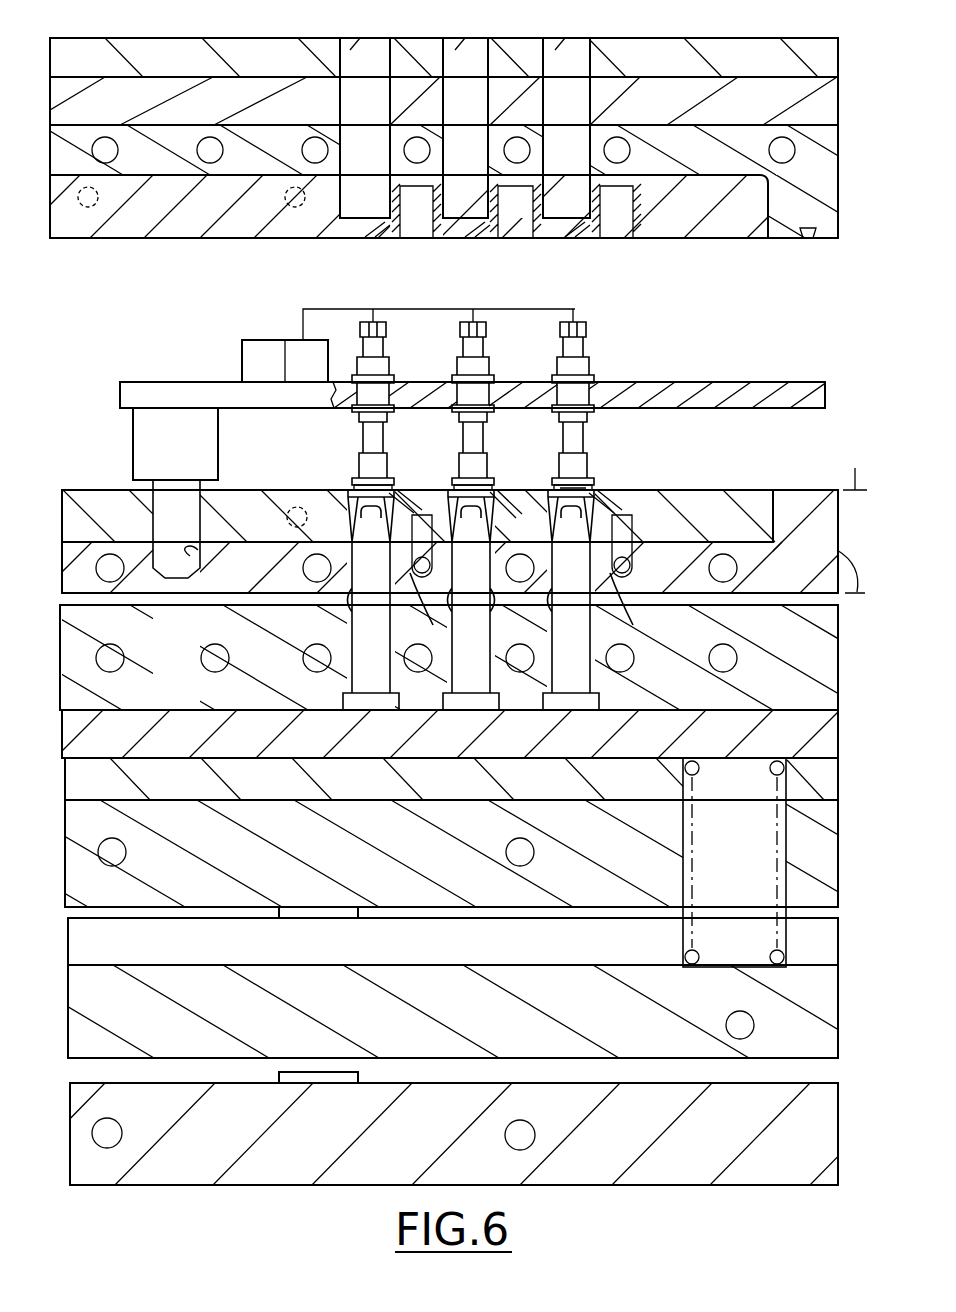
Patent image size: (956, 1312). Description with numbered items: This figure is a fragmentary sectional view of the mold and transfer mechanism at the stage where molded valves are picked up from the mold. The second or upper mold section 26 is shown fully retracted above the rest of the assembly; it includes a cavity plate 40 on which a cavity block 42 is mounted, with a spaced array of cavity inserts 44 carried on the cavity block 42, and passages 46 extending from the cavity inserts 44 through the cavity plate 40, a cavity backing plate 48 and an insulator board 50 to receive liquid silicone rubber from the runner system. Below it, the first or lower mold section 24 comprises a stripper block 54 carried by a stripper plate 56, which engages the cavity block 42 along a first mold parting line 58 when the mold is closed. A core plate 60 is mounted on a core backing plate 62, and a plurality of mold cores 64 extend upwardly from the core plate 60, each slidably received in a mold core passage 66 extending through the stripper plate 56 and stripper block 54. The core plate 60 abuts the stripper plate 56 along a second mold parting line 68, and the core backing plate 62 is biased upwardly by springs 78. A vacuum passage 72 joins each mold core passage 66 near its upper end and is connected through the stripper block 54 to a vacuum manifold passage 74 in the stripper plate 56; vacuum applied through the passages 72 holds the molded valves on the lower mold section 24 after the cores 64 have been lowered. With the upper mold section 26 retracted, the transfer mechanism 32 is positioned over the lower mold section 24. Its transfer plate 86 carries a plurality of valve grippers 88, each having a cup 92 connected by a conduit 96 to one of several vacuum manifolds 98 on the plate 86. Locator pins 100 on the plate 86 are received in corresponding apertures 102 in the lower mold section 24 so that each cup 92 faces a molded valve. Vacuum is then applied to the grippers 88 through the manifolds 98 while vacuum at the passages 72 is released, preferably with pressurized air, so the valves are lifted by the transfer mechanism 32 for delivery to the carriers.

The first or lower mold section 24 is at (97, 486).
The second or upper mold section 26 is at (50, 160).
The transfer mechanism 32 is at (180, 380).
The cavity plate 40 is at (792, 205).
The cavity block 42 is at (728, 233).
The cavity insert 44 is at (550, 240).
The passage 46 is at (553, 50).
The cavity backing plate 48 is at (703, 87).
The insulator board 50 is at (648, 58).
The stripper block 54 is at (703, 495).
The stripper plate 56 is at (788, 497).
The first mold parting line 58 is at (845, 468).
The core plate 60 is at (172, 665).
The core backing plate 62 is at (130, 748).
The mold core 64 is at (375, 685).
The mold core passage 66 is at (340, 615).
The second mold parting line 68 is at (840, 552).
The vacuum passage 72 is at (417, 500).
The vacuum manifold passage 74 is at (635, 540).
The spring 78 is at (768, 770).
The transfer plate 86 is at (660, 392).
The valve gripper 88 is at (370, 432).
The cup 92 is at (592, 478).
The conduit 96 is at (367, 313).
The vacuum manifold 98 is at (287, 333).
The locator pin 100 is at (215, 500).
The aperture 102 is at (190, 556).